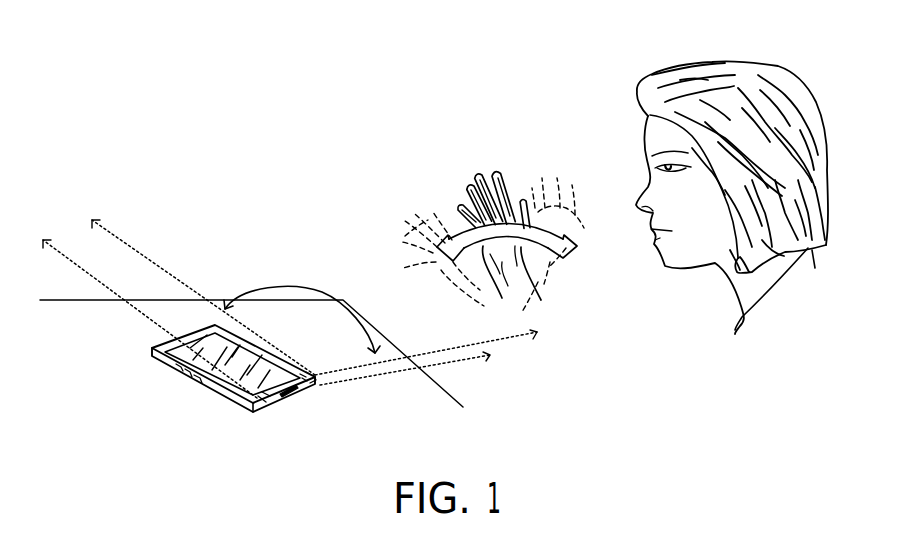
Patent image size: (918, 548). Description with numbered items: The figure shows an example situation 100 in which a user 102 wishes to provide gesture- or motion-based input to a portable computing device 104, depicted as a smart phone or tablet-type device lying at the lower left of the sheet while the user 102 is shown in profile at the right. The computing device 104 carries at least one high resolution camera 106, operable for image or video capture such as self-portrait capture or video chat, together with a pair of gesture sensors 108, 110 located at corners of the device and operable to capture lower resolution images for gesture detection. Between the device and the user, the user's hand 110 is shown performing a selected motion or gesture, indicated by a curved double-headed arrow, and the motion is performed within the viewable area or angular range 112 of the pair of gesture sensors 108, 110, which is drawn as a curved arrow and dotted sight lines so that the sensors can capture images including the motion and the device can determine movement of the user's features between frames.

The situation 100 is at (128, 98).
The user 102 is at (600, 117).
The computing device 104 is at (150, 354).
The high resolution camera 106 is at (166, 350).
The gesture sensor 108 is at (318, 382).
The gesture sensor / user's hand 110 is at (420, 178).
The viewable area or angular range 112 is at (323, 288).